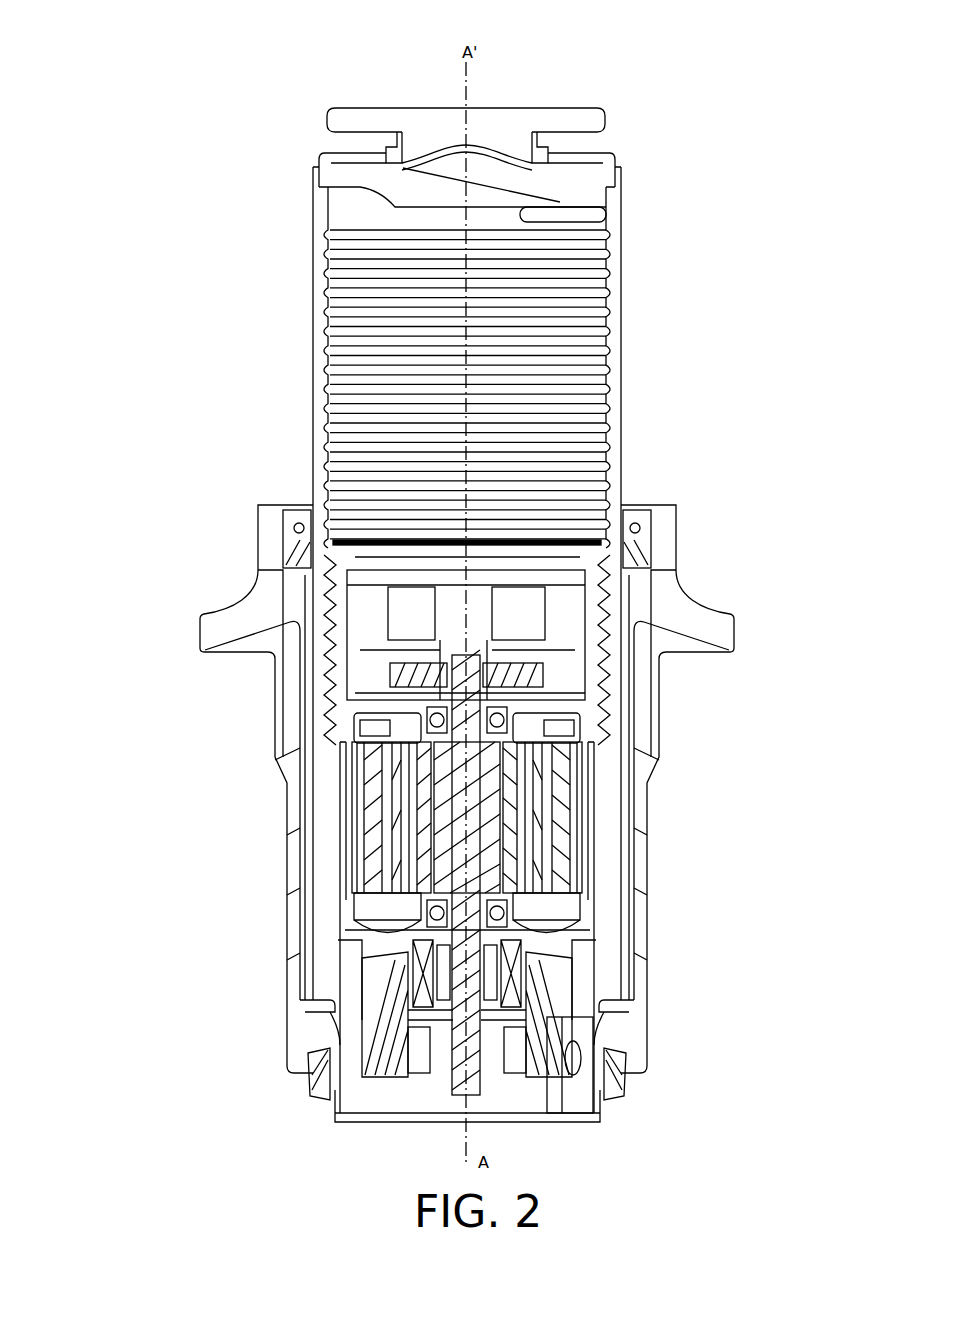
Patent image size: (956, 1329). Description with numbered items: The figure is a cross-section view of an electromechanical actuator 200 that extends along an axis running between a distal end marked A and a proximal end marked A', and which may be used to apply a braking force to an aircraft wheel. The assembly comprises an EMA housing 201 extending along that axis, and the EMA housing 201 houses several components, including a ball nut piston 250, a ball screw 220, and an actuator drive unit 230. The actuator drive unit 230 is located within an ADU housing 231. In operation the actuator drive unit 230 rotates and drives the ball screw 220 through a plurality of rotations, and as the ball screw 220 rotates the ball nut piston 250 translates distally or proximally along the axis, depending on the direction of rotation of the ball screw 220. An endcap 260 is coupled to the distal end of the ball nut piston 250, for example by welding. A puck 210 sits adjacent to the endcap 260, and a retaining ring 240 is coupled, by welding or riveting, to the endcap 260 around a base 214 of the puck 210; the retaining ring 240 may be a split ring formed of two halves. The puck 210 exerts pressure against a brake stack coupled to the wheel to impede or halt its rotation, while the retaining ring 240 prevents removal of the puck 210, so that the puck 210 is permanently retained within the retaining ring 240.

The electromechanical actuator 200 is at (186, 105).
The puck 210 is at (555, 108).
The retaining ring 240 is at (385, 163).
The endcap 260 is at (620, 170).
The base 214 is at (460, 135).
The ball nut piston 250 is at (620, 250).
The EMA housing 201 is at (677, 557).
The ball screw 220 is at (643, 703).
The actuator drive unit 230 is at (513, 800).
The ADU housing 231 is at (597, 860).